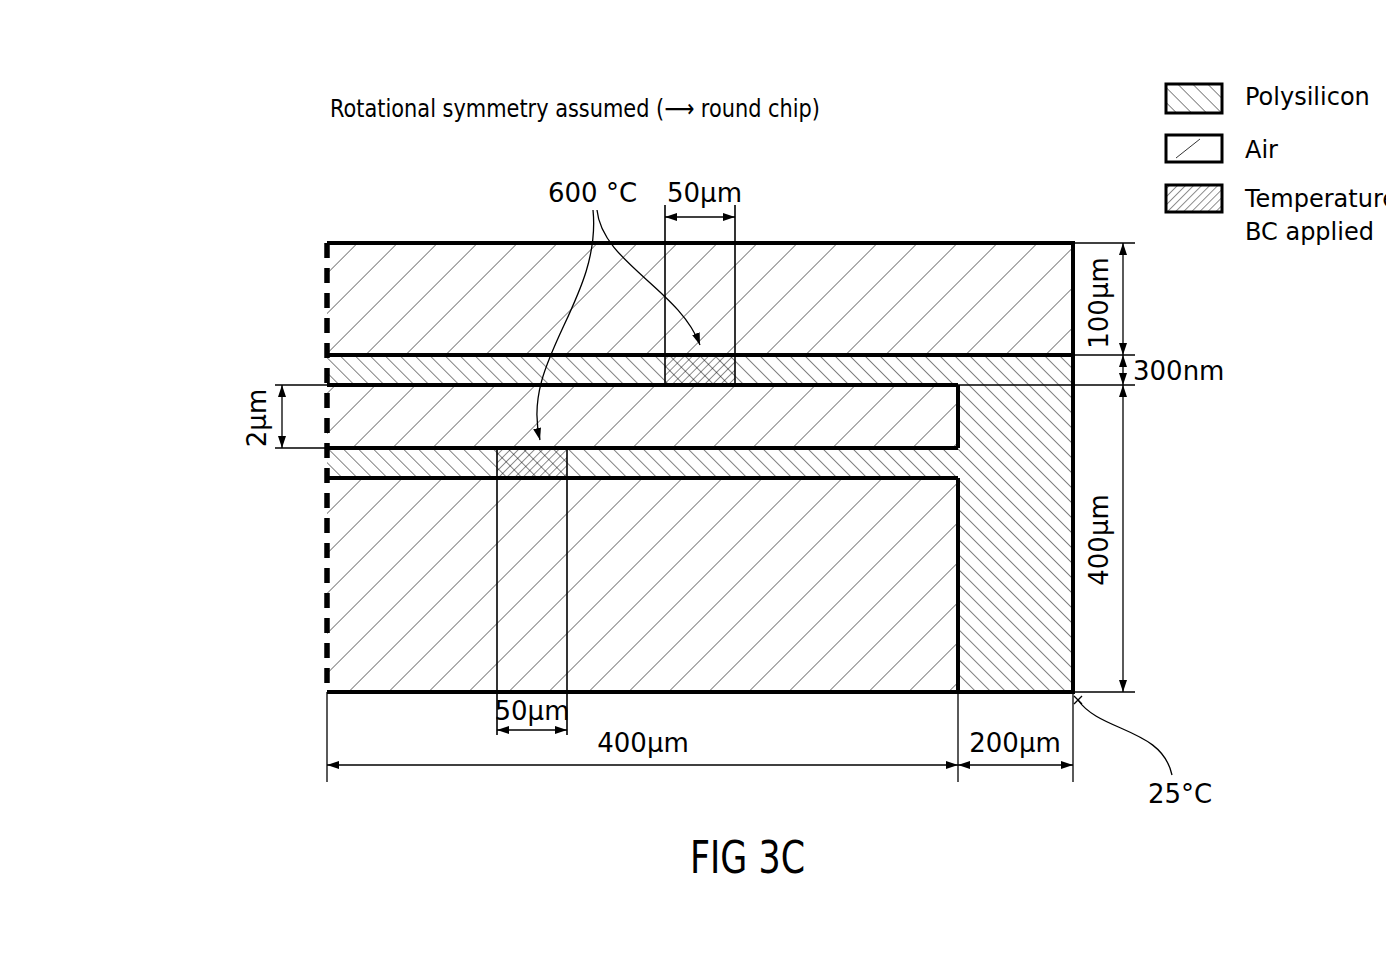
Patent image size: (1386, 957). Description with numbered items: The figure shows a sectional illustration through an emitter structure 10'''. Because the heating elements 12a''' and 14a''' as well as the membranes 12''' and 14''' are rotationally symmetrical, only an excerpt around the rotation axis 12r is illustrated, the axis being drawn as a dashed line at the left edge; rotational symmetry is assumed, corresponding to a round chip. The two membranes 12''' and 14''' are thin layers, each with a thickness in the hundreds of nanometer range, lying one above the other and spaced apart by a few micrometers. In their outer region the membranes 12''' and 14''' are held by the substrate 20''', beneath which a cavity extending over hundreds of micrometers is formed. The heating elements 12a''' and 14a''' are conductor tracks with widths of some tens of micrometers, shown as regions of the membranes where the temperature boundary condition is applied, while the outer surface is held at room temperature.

The emitter structure 10''' is at (598, 369).
The membrane 12''' is at (700, 274).
The membrane 14''' is at (642, 320).
The substrate 20''' is at (1009, 427).
The heating element 12a''' is at (676, 371).
The heating element 14a''' is at (498, 591).
The rotation axis 12r is at (327, 662).